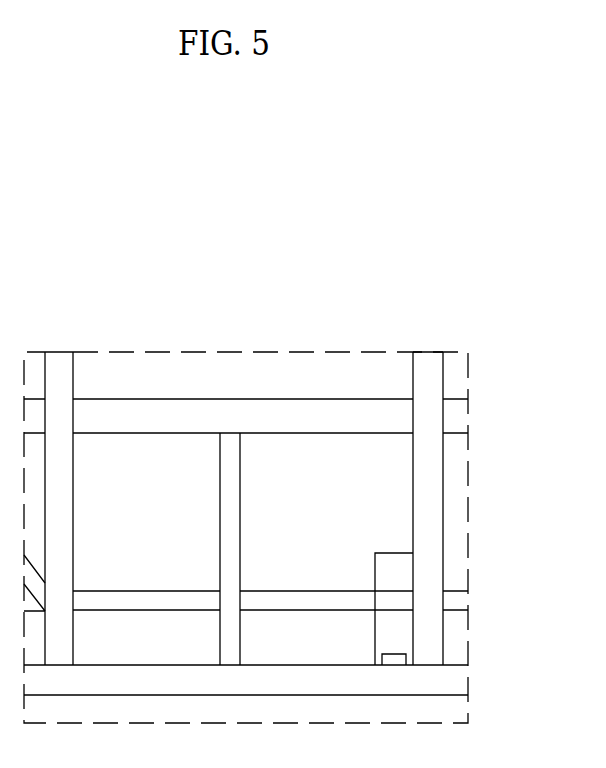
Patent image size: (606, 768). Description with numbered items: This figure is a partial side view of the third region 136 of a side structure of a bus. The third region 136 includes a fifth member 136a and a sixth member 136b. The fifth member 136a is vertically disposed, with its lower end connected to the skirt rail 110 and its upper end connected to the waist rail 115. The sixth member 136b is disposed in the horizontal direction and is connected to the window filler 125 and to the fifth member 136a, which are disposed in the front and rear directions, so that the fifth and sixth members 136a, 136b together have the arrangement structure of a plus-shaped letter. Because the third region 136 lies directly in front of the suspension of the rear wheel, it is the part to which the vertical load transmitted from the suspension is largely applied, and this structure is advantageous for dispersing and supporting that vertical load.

The skirt rail 110 is at (452, 681).
The waist rail 115 is at (455, 414).
The window filler 125 is at (59, 372).
The third region 136 is at (305, 264).
The fifth member 136a is at (230, 522).
The sixth member 136b is at (341, 600).